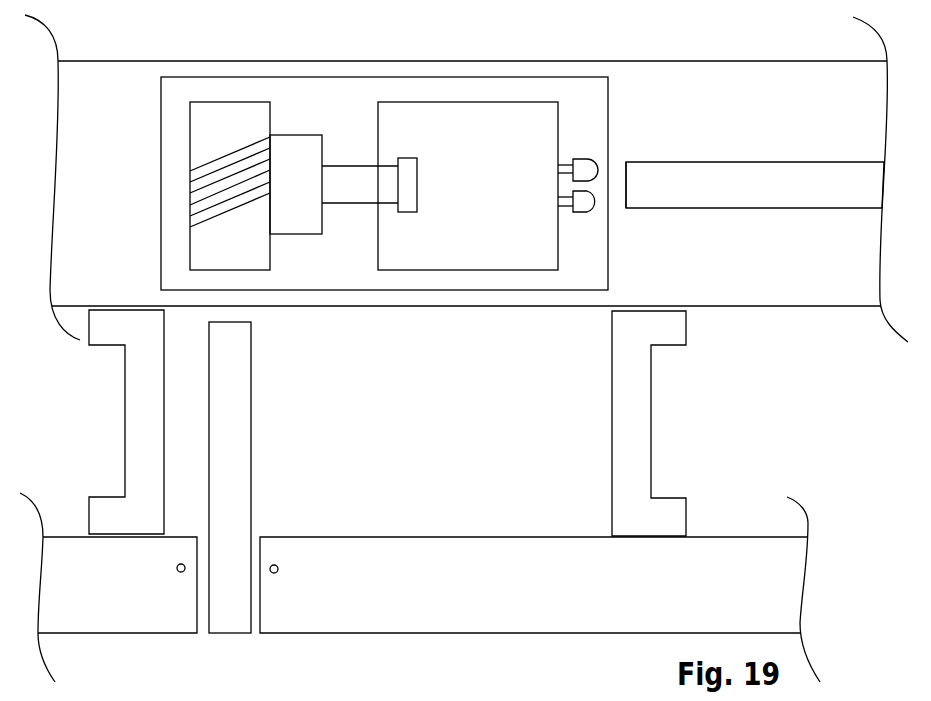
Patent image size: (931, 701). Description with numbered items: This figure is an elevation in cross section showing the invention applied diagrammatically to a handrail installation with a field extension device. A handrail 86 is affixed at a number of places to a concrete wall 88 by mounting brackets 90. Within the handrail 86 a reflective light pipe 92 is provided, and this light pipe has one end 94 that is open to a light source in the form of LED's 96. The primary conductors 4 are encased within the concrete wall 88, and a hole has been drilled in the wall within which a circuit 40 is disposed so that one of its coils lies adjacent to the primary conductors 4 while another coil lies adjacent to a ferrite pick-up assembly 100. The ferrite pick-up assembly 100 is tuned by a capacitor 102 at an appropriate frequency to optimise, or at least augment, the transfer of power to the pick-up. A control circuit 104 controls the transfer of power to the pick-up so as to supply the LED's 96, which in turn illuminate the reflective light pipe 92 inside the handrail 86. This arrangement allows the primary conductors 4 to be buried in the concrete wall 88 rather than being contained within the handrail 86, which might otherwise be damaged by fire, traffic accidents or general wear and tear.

The primary conductors 4 is at (178, 572).
The circuit 40 is at (241, 391).
The handrail 86 is at (466, 178).
The concrete wall 88 is at (420, 587).
The mounting brackets 90 is at (138, 383).
The reflective light pipe 92 is at (755, 185).
The end 94 is at (627, 190).
The LED's 96 is at (592, 170).
The ferrite pick-up assembly 100 is at (230, 186).
The capacitor 102 is at (407, 200).
The control circuit 104 is at (468, 186).